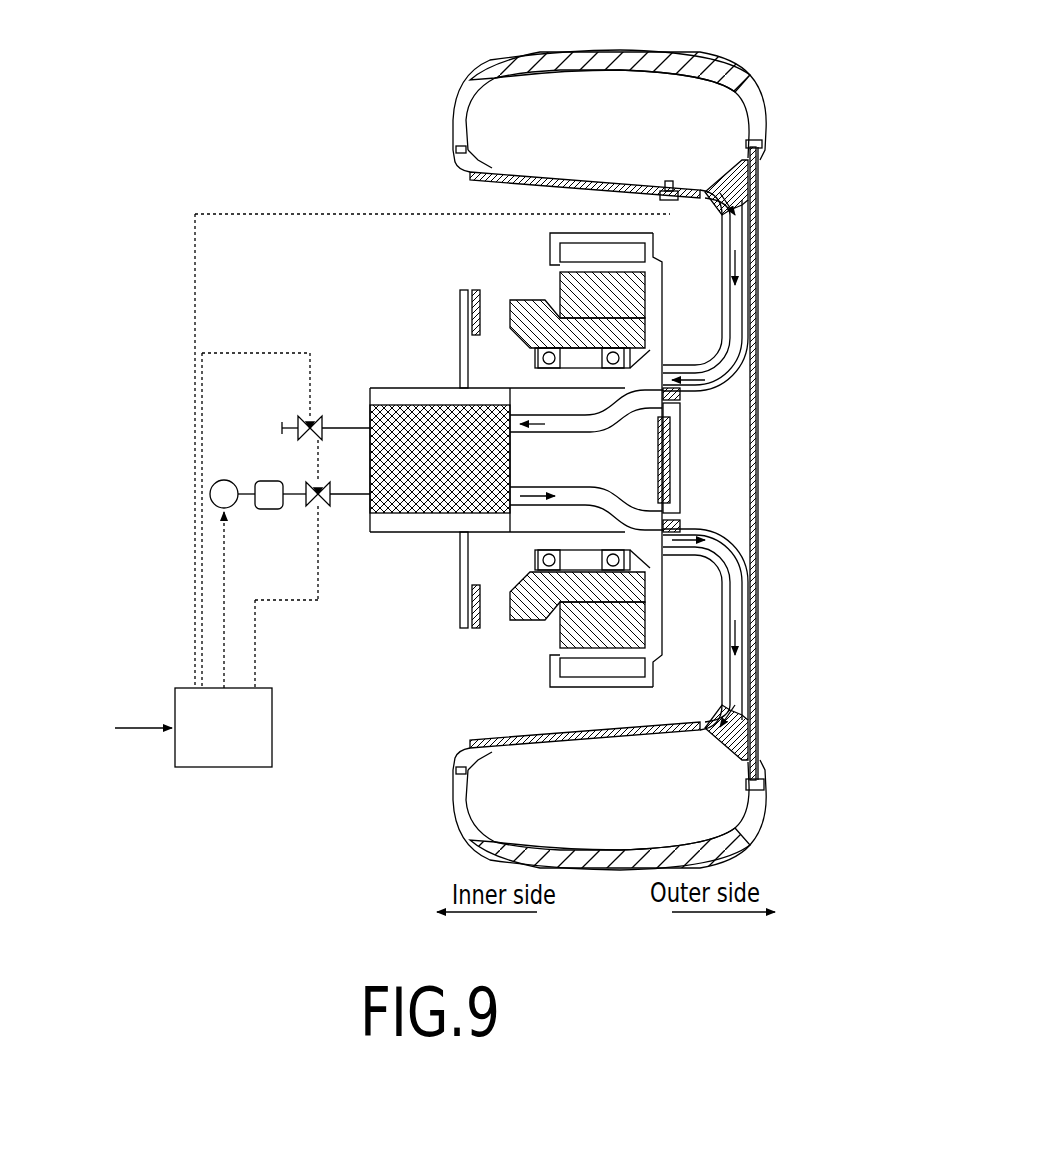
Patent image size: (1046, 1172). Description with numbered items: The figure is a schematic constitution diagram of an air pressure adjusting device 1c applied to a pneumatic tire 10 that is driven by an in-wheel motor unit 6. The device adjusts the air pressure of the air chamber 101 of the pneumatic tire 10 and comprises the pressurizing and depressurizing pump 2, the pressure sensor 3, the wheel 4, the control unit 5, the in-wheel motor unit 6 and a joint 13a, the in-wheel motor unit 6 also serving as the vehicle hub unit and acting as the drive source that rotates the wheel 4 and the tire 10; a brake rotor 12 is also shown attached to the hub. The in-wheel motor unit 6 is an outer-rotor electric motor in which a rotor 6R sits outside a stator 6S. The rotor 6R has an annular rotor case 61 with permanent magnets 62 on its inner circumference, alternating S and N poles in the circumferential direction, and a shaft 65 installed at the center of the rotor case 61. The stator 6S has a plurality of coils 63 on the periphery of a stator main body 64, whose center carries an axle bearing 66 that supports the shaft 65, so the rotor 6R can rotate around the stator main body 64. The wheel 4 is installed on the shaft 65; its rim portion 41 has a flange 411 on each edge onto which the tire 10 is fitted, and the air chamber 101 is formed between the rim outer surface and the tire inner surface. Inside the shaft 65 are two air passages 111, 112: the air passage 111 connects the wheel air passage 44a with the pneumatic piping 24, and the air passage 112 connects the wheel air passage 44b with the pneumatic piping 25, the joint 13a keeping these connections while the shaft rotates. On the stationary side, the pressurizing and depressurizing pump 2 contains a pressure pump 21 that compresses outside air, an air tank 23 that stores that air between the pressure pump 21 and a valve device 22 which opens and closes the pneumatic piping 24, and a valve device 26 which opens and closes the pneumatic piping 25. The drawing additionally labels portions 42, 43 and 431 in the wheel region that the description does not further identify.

The air pressure adjusting device 1c is at (358, 163).
The pressurizing and depressurizing pump 2 is at (286, 520).
The pressure sensor 3 is at (669, 181).
The wheel 4 is at (777, 463).
The control unit 5 is at (185, 688).
The in-wheel motor unit 6 is at (523, 462).
The rotor 6R is at (505, 656).
The stator 6S is at (405, 598).
The pneumatic tire 10 is at (735, 62).
The air chamber 101 is at (682, 90).
The brake rotor 12 is at (462, 297).
The joint 13a is at (370, 412).
The pressure pump 21 is at (220, 480).
The valve device 22 is at (320, 482).
The air tank 23 is at (270, 510).
The pneumatic piping 24 is at (245, 492).
The pneumatic piping 25 is at (352, 494).
The valve device 26 is at (312, 418).
The rim portion 41 is at (607, 181).
The air passage 42 is at (670, 388).
The disc 43 is at (757, 292).
The air passage 44a is at (752, 618).
The air passage 44b is at (736, 346).
The rotor case 61 is at (552, 236).
The permanent magnets 62 is at (575, 257).
The coils 63 is at (565, 290).
The stator main body 64 is at (500, 330).
The shaft 65 is at (490, 385).
The axle bearing 66 is at (540, 358).
The air passage 111 is at (610, 500).
The air passage 112 is at (614, 420).
The flange 411 is at (457, 151).
The disc wall 431 is at (757, 272).